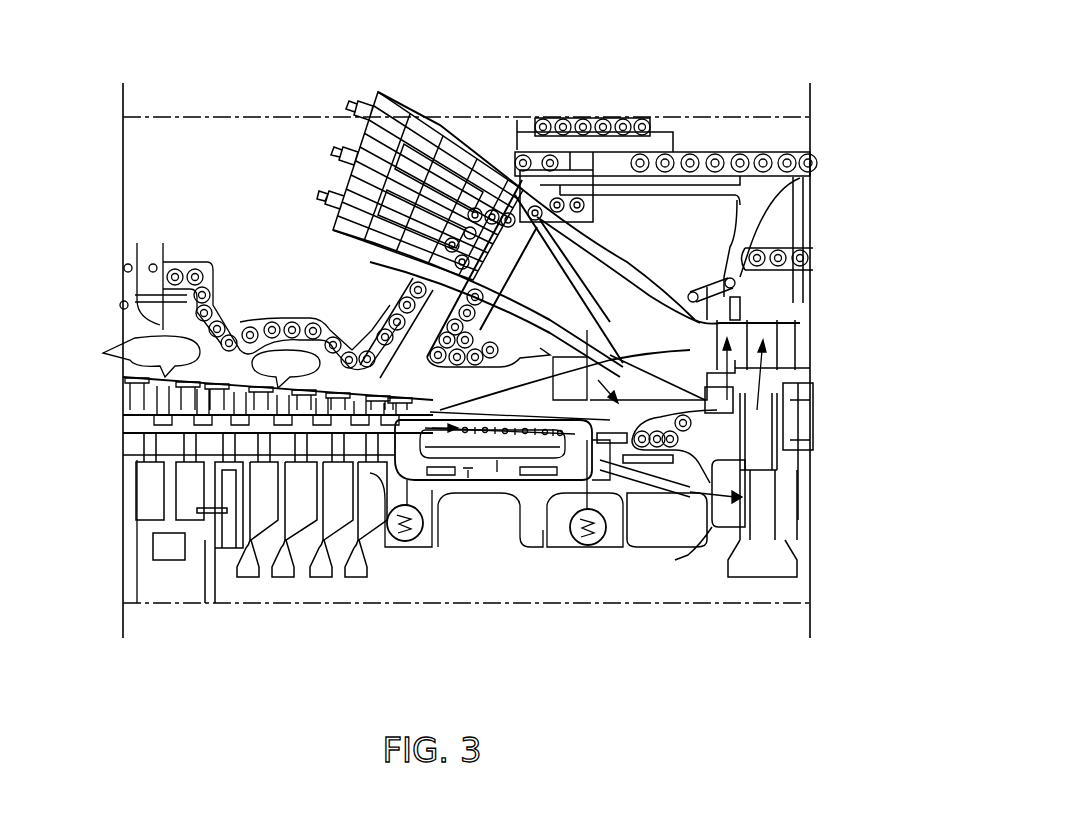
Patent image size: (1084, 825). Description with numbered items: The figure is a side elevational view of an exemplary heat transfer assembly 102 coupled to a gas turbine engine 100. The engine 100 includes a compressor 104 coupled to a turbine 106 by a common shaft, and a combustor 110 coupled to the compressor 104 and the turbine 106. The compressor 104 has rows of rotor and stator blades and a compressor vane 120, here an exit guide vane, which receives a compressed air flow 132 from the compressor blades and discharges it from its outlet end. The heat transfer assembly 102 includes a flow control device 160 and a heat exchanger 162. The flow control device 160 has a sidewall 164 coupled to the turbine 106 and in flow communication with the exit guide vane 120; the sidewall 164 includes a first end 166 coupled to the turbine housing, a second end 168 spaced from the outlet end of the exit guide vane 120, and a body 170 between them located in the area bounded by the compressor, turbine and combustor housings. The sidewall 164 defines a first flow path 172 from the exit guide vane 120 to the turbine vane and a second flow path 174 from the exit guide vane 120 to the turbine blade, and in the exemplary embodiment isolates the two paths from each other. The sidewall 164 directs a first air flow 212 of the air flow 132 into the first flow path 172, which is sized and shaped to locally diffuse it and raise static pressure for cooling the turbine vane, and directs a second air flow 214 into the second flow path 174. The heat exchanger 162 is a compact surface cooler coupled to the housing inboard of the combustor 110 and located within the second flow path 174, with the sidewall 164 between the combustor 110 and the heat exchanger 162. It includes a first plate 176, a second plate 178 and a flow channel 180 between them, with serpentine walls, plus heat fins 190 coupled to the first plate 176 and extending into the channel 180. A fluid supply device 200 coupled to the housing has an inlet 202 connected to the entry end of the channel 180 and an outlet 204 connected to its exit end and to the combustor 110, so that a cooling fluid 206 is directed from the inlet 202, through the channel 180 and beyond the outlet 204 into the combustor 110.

The gas turbine engine 100 is at (400, 80).
The heat transfer assembly 102 is at (288, 253).
The compressor 104 is at (153, 348).
The turbine 106 is at (770, 280).
The combustor 110 is at (567, 253).
The compressor vane 120 is at (350, 325).
The compressed air flow 132 is at (200, 420).
The flow control device 160 is at (330, 347).
The heat exchanger 162 is at (430, 442).
The sidewall 164 is at (548, 472).
The first end 166 is at (755, 432).
The second end 168 is at (376, 333).
The body 170 is at (603, 367).
The first flow path 172 is at (700, 361).
The second flow path 174 is at (670, 540).
The first plate 176 is at (447, 500).
The second plate 178 is at (480, 482).
The flow channel 180 is at (512, 470).
The heat fins 190 is at (518, 337).
The fluid supply device 200 is at (420, 470).
The inlet 202 is at (435, 548).
The outlet 204 is at (575, 548).
The cooling fluid 206 is at (395, 541).
The first air flow 212 is at (672, 330).
The second air flow 214 is at (790, 488).